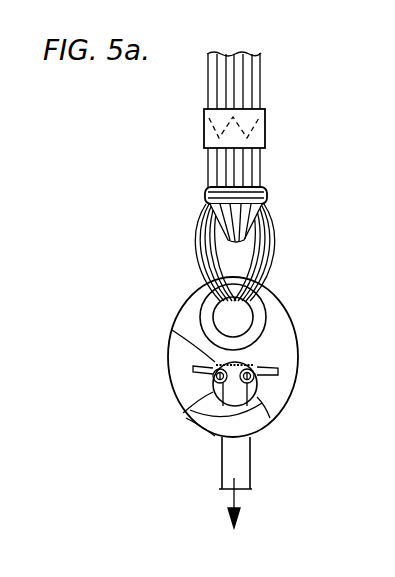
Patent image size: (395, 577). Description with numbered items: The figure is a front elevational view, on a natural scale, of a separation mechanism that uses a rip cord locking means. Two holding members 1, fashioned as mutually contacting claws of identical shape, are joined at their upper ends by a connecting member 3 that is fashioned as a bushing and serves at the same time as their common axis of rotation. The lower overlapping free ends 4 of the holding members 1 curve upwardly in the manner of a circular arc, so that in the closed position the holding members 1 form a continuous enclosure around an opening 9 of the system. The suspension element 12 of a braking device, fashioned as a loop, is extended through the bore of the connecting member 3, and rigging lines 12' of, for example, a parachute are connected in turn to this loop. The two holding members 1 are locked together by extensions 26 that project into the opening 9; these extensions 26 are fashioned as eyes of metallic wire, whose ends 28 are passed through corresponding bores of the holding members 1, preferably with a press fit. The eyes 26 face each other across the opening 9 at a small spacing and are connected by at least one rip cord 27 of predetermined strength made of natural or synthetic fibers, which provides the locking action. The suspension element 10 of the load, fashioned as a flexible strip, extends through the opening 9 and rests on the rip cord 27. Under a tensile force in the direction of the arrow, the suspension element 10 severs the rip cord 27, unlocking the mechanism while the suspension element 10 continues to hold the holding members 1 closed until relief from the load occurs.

The rigging lines 12' is at (260, 119).
The suspension element of the braking device 12 is at (257, 244).
The holding member 1 is at (282, 325).
The connecting member 3 is at (262, 303).
The rip cord 27 is at (268, 420).
The opening 9 is at (260, 393).
The ends of the eyes 28 is at (282, 369).
The extension 26 is at (262, 388).
The lower free end 4 is at (207, 432).
The suspension element 10 is at (222, 474).